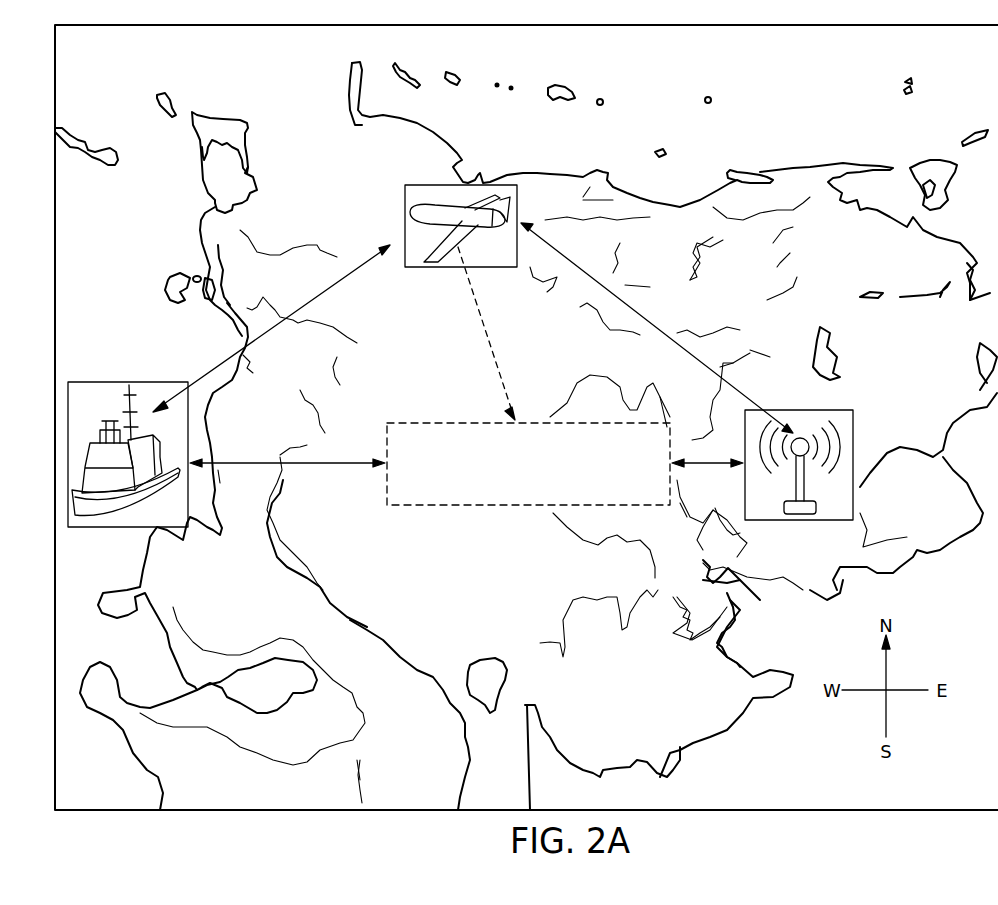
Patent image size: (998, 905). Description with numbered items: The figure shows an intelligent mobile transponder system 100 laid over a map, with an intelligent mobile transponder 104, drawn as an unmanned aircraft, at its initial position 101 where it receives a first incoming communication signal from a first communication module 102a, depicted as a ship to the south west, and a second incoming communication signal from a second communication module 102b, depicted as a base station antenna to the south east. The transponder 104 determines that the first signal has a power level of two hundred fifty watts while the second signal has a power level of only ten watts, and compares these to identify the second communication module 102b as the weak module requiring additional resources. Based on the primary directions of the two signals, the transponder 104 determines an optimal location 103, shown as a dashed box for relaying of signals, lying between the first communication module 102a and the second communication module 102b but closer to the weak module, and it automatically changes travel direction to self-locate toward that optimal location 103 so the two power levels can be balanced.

The intelligent mobile transponder system 100 is at (152, 163).
The initial position 101 is at (467, 183).
The first communication module 102a is at (108, 500).
The second communication module 102b is at (800, 518).
The optimal location 103 is at (462, 422).
The intelligent mobile transponder 104 is at (428, 205).